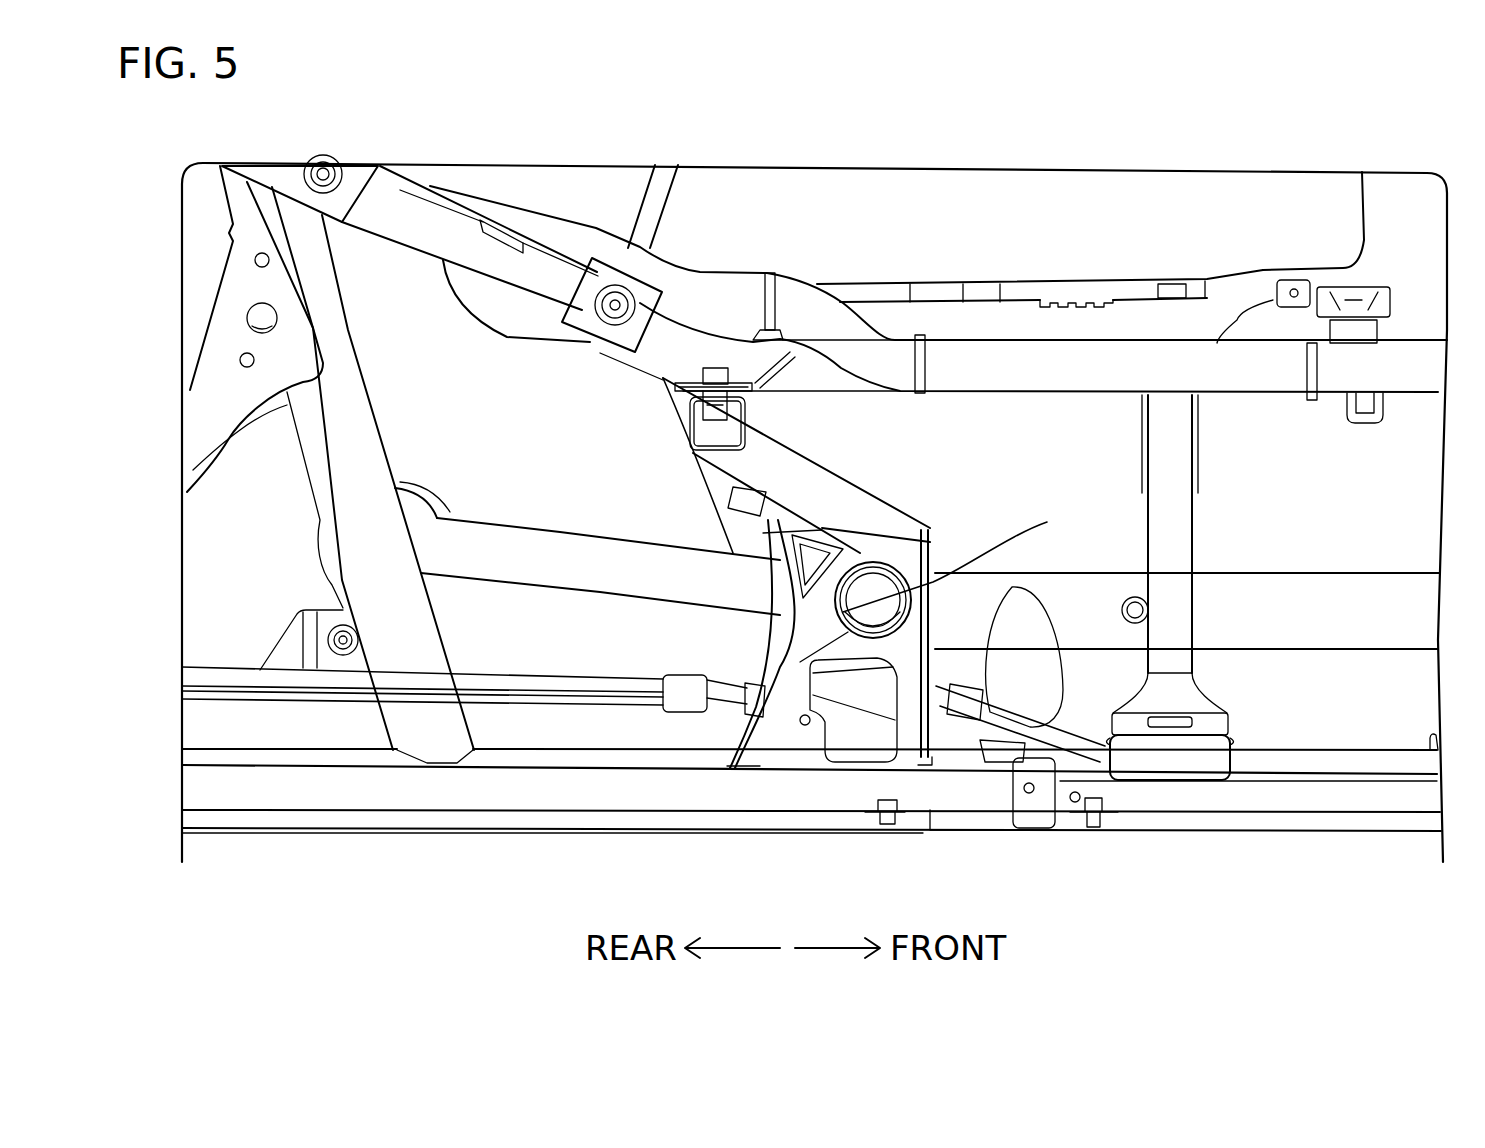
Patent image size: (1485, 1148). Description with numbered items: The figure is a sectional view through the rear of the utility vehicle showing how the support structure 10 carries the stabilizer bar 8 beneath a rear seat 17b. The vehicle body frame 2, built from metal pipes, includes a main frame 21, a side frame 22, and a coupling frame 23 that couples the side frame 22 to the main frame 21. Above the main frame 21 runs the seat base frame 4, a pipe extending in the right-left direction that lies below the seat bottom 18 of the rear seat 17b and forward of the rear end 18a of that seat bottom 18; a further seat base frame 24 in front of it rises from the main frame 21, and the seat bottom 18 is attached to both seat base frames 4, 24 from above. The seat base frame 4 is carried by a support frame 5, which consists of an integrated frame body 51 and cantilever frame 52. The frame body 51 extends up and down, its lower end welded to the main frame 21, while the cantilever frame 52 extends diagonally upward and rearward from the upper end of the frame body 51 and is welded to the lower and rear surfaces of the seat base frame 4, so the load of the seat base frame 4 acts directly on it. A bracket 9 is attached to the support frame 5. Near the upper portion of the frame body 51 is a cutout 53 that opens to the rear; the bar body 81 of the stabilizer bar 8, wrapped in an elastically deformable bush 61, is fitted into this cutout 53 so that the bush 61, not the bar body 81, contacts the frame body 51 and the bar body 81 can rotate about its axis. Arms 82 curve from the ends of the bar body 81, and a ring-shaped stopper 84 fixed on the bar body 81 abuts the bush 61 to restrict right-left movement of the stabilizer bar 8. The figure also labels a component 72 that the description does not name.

The vehicle body frame 2 is at (370, 393).
The seat base frame 4 is at (683, 424).
The support frame 5 is at (741, 731).
The stabilizer bar 8 is at (633, 537).
The bracket 9 is at (763, 533).
The support structure 10 is at (880, 490).
The rear seat 17b is at (963, 284).
The seat bottom 18 is at (1140, 283).
The rear end 18a is at (500, 227).
The main frame 21 is at (613, 833).
The side frame 22 is at (1263, 571).
The coupling frame 23 is at (1060, 667).
The seat base frame 24 is at (1200, 440).
The frame body 51 is at (1047, 522).
The cantilever frame 52 is at (847, 480).
The cutout 53 is at (800, 662).
The bush 61 is at (818, 535).
The rod 72 is at (208, 683).
The bar body 81 is at (937, 583).
The arm 82 is at (497, 508).
The stopper 84 is at (937, 530).